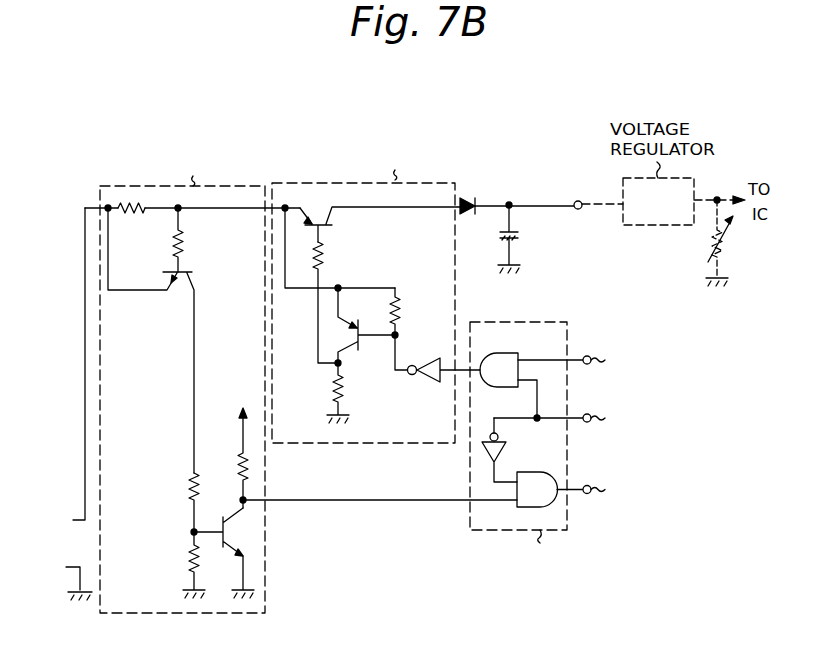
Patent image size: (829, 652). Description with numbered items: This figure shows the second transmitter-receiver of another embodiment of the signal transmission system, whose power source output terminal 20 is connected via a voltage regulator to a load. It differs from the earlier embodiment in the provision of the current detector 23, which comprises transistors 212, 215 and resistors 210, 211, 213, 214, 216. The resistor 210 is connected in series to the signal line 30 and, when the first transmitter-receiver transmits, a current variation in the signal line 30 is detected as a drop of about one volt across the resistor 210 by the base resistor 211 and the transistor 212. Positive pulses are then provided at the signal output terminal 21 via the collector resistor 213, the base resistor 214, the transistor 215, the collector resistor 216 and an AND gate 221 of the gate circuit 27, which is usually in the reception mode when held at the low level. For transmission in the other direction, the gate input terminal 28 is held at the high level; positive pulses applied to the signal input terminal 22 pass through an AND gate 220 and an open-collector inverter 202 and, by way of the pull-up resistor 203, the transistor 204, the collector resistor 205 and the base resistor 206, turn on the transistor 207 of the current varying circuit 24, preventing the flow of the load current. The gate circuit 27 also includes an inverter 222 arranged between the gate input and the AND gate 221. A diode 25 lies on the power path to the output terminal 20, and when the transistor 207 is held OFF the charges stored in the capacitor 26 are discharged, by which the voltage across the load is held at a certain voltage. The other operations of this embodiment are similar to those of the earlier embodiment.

The current detector 23 is at (100, 186).
The current varying circuit 24 is at (305, 183).
The diode 25 is at (470, 198).
The capacitor 26 is at (522, 239).
The power source output terminal 20 is at (582, 206).
The gate circuit 27 is at (480, 530).
The signal input terminal 22 is at (637, 355).
The gate input terminal 28 is at (637, 418).
The signal output terminal 21 is at (639, 492).
The signal line 30 is at (55, 384).
The resistor 210 is at (118, 212).
The base resistor 211 is at (186, 229).
The transistor 212 is at (180, 280).
The collector resistor 213 is at (187, 473).
The base resistor 214 is at (187, 549).
The transistor 215 is at (230, 532).
The collector resistor 216 is at (238, 471).
The transistor 207 is at (330, 217).
The base resistor 206 is at (326, 256).
The transistor 204 is at (364, 315).
The pull-up resistor 203 is at (410, 299).
The collector resistor 205 is at (358, 379).
The open-collector inverter 202 is at (428, 378).
The AND gate 220 is at (490, 352).
The AND gate 221 is at (522, 508).
The inverter 222 is at (500, 455).